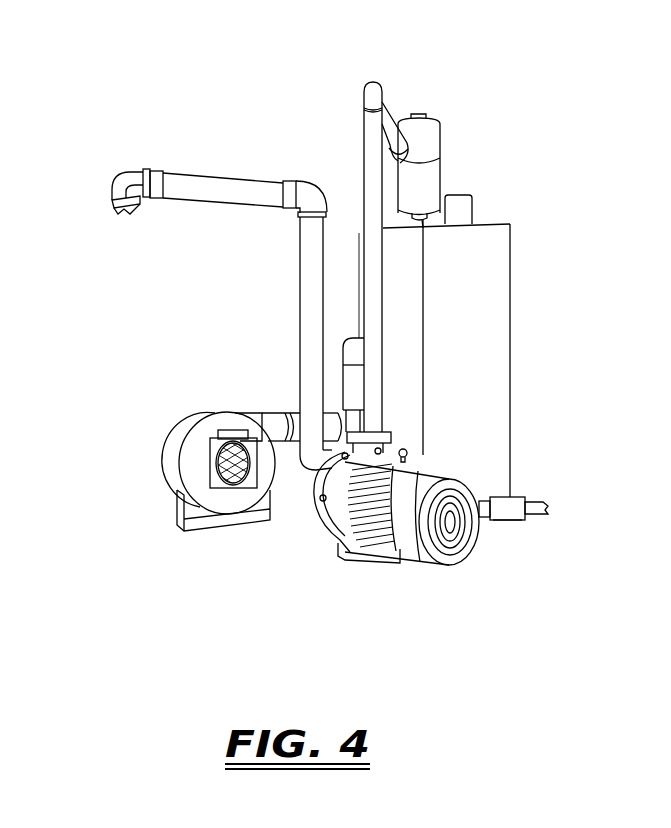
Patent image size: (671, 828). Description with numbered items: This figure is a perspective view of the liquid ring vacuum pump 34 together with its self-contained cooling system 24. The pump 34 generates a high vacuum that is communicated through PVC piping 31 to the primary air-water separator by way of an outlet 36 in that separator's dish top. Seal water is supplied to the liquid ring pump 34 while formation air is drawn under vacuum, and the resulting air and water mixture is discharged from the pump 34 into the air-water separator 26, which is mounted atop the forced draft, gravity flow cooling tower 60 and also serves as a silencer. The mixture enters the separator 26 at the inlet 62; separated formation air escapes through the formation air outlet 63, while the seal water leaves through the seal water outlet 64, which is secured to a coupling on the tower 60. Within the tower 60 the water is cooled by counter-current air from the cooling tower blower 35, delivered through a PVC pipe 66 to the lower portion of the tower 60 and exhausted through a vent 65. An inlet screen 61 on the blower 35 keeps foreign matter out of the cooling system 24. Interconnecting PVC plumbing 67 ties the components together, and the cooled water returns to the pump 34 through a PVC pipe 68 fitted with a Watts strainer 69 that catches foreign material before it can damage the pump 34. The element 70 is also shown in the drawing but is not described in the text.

The self-contained cooling system 24 is at (548, 158).
The air-water separator 26 is at (405, 183).
The PVC piping 31 is at (190, 185).
The liquid ring vacuum pump 34 is at (360, 527).
The cooling tower blower 35 is at (185, 432).
The outlet 36 is at (120, 213).
The cooling tower 60 is at (475, 338).
The inlet screen 61 is at (218, 476).
The formation air and seal water mixture inlet 62 is at (410, 157).
The formation air outlet 63 is at (425, 118).
The seal water outlet 64 is at (404, 215).
The vent 65 is at (472, 205).
The PVC pipe 66 is at (352, 386).
The PVC plumbing 67 is at (372, 285).
The PVC pipe 68 is at (543, 513).
The Watts strainer 69 is at (510, 507).
The hose 70 is at (670, 180).